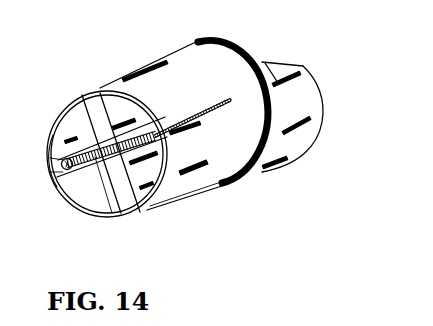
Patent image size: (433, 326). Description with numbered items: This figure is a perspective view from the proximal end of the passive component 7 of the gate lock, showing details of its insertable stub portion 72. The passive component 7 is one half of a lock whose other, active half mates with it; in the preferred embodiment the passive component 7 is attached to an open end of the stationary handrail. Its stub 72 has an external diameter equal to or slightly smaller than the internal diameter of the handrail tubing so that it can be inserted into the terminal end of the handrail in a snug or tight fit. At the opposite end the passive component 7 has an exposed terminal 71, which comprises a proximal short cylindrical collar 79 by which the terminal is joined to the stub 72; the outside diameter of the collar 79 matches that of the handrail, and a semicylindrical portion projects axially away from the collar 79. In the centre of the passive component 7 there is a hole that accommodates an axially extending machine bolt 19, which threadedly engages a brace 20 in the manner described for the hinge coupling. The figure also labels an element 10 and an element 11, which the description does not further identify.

The passive component 7 is at (133, 62).
The end cap 10 is at (98, 211).
The threaded rod 11 is at (231, 104).
The machine bolt 19 is at (66, 193).
The brace 20 is at (123, 203).
The exposed terminal 71 is at (292, 163).
The insertable stub portion 72 is at (193, 178).
The cylindrical collar 79 is at (266, 164).